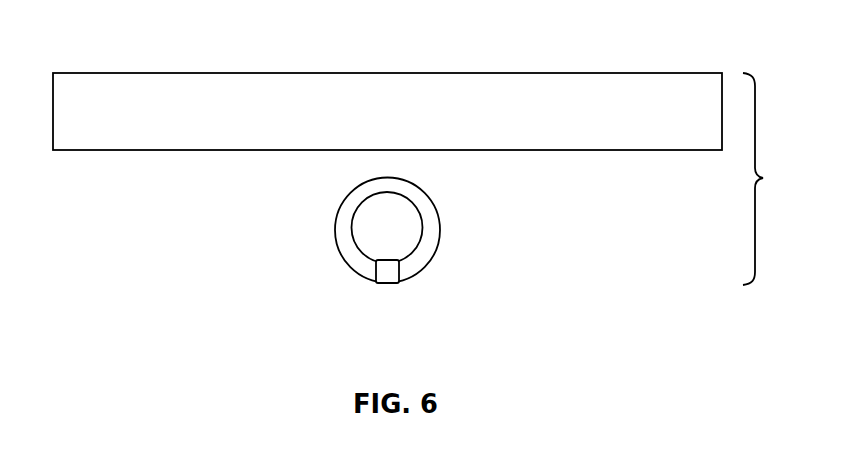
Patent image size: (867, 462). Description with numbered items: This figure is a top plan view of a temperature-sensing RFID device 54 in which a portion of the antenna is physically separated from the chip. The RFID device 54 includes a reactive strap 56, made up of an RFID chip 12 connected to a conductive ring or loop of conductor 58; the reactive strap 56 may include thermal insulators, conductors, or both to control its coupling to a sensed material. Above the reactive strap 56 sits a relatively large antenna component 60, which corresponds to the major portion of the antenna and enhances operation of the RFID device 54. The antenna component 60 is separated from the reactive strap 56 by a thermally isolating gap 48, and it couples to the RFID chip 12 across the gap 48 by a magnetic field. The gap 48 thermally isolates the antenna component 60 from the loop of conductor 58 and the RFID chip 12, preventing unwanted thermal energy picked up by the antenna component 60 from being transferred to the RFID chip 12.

The antenna component 60 is at (397, 97).
The RFID device 54 is at (771, 179).
The thermally isolating gap 48 is at (396, 164).
The conductive ring or loop of conductor 58 is at (428, 247).
The RFID chip 12 is at (387, 284).
The reactive strap 56 is at (327, 243).